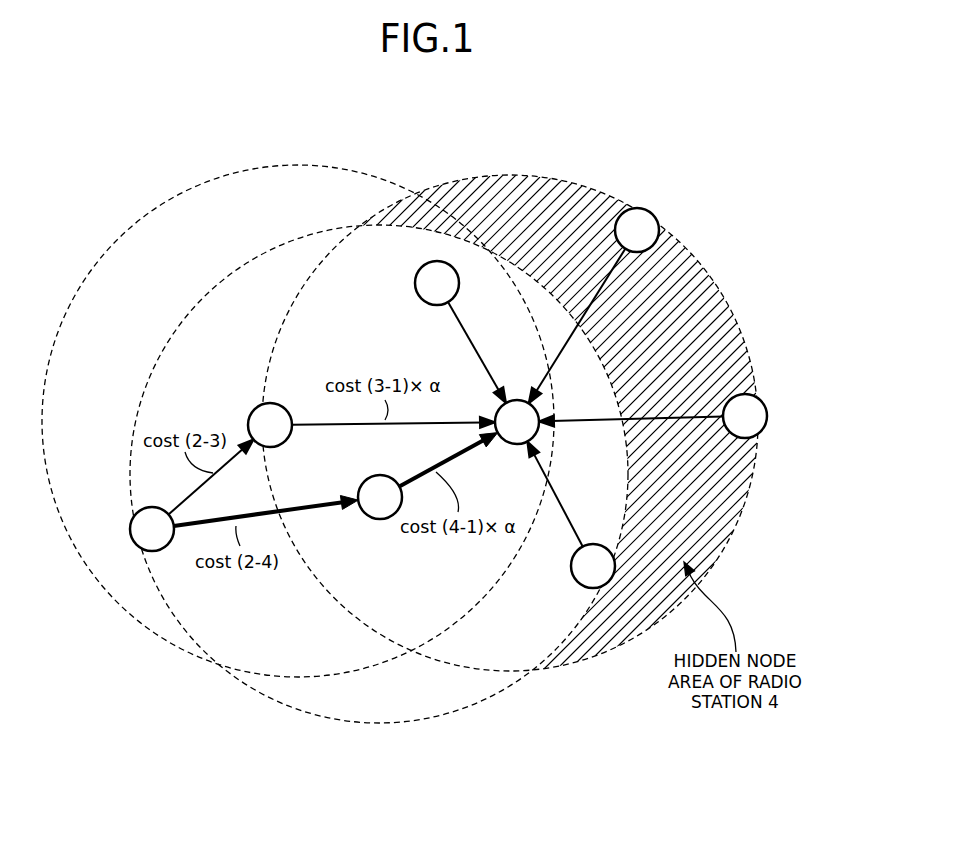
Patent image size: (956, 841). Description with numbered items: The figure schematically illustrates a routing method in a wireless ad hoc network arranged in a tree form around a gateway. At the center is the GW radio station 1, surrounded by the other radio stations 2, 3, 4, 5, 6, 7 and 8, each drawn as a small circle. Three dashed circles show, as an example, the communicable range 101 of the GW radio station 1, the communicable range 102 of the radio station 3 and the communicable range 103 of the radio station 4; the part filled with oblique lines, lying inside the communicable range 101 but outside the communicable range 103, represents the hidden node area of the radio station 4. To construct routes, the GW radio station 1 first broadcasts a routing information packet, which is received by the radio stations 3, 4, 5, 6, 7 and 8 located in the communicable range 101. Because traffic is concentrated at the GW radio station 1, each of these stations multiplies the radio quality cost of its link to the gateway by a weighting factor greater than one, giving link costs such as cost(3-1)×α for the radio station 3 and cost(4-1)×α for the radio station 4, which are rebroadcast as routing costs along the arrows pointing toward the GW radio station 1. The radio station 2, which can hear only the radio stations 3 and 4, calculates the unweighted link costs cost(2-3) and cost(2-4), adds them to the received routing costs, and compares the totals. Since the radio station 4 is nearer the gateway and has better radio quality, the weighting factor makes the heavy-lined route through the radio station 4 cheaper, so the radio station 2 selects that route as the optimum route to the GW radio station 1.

The gateway (GW) radio station 1 is at (519, 400).
The radio station 2 is at (136, 539).
The radio station 3 is at (280, 403).
The radio station 4 is at (373, 519).
The radio station 5 is at (415, 284).
The radio station 6 is at (598, 544).
The radio station 7 is at (767, 416).
The radio station 8 is at (650, 208).
The communicable range of the GW radio station 101 is at (537, 176).
The communicable range of radio station 3 102 is at (138, 222).
The communicable range of radio station 4 103 is at (377, 723).